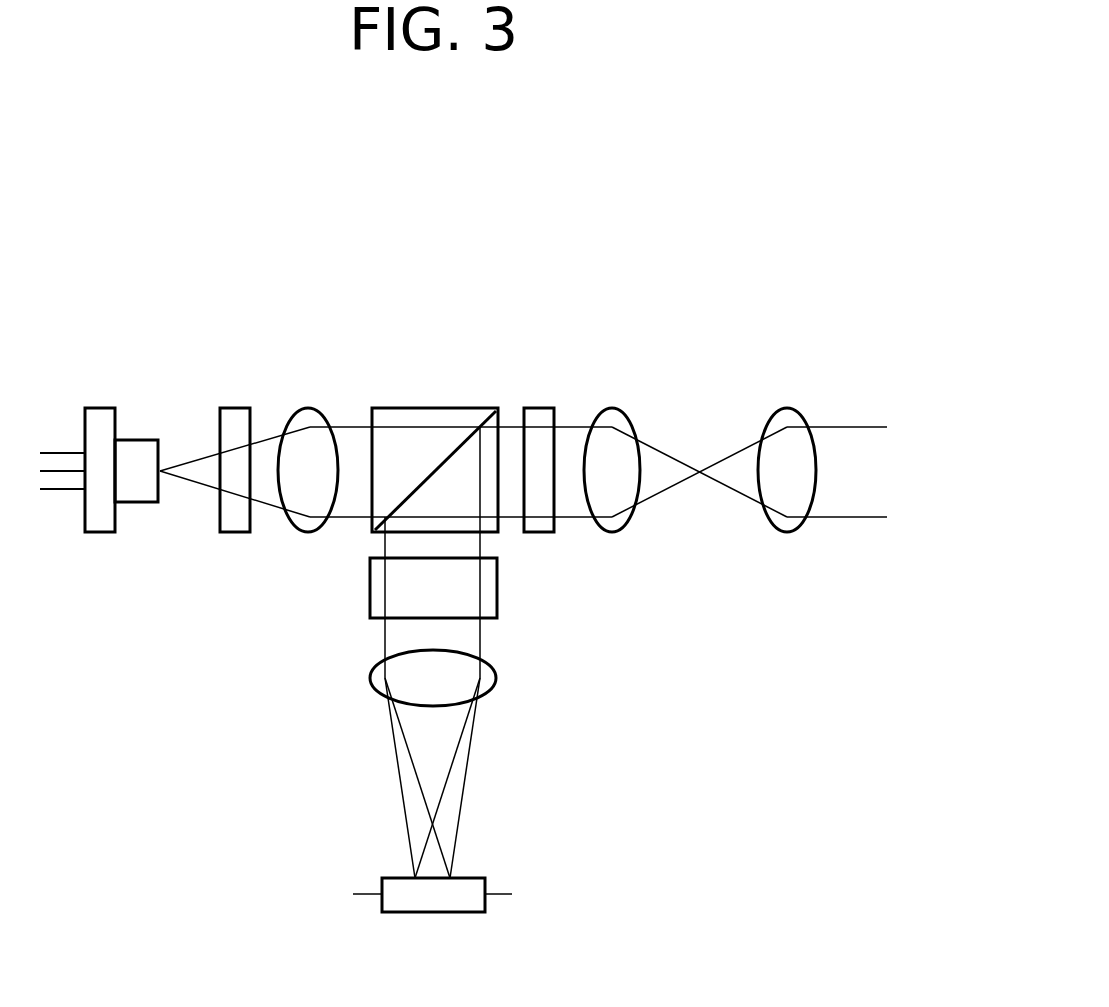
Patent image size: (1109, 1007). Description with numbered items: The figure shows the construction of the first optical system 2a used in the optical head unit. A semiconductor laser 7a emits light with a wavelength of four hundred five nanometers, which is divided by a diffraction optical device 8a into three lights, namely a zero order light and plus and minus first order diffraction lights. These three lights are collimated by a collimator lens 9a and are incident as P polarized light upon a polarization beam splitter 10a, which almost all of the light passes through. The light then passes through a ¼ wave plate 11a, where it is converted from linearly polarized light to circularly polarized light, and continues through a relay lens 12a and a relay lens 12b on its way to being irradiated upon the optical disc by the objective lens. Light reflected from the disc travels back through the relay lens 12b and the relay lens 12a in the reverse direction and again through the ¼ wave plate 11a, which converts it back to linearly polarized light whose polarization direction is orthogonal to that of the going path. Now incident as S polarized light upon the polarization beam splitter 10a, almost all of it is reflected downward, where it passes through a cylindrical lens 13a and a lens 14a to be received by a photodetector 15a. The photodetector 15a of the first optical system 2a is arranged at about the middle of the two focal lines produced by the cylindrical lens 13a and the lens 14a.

The first optical system 2a is at (713, 235).
The semiconductor laser 7a is at (100, 408).
The diffraction optical device 8a is at (234, 408).
The collimator lens 9a is at (310, 408).
The polarization beam splitter 10a is at (425, 408).
The ¼ wave plate 11a is at (540, 408).
The relay lens 12a is at (610, 533).
The relay lens 12b is at (786, 533).
The cylindrical lens 13a is at (370, 582).
The lens 14a is at (370, 678).
The photodetector 15a is at (430, 913).